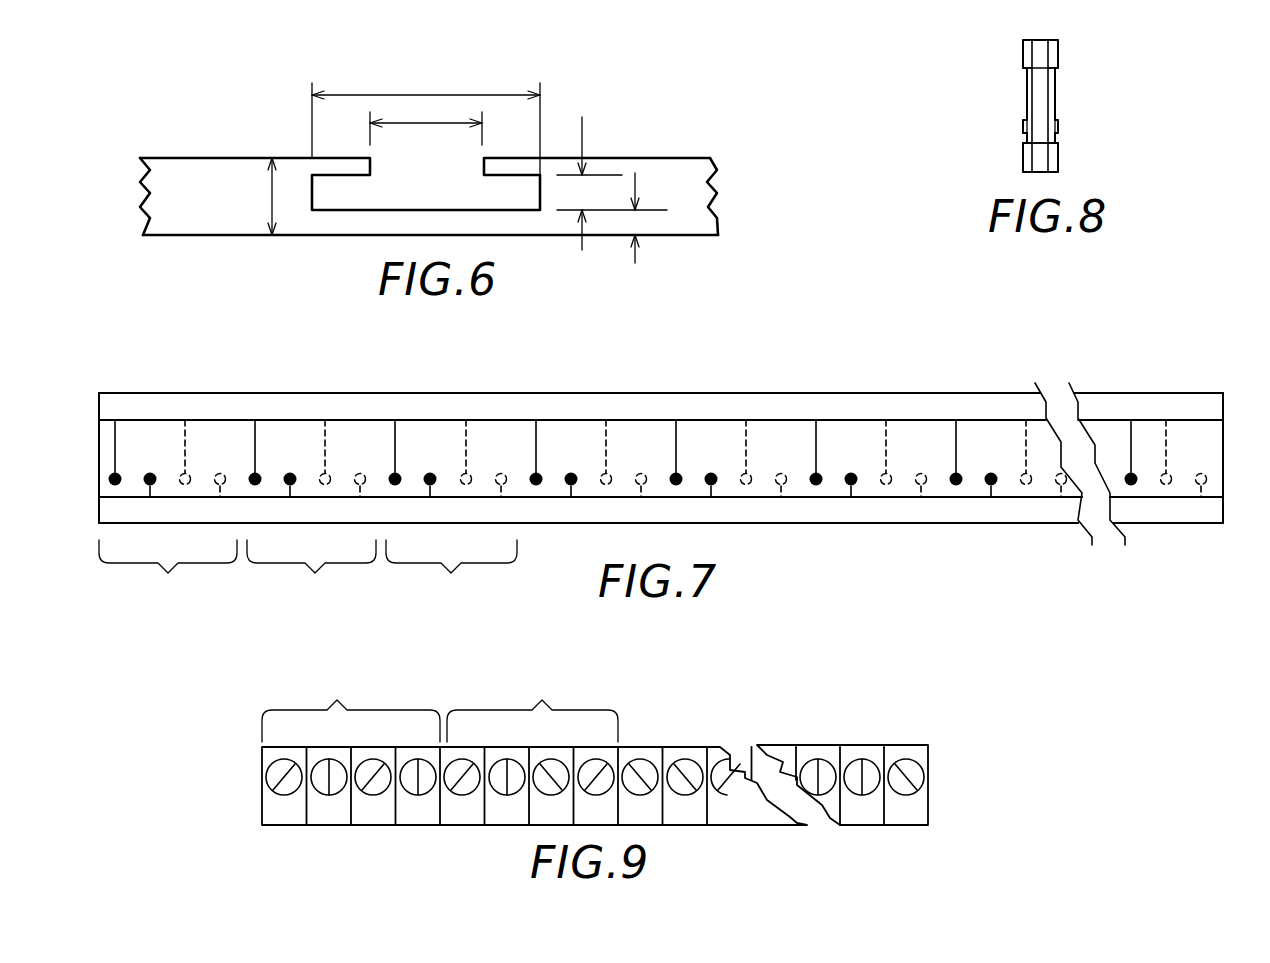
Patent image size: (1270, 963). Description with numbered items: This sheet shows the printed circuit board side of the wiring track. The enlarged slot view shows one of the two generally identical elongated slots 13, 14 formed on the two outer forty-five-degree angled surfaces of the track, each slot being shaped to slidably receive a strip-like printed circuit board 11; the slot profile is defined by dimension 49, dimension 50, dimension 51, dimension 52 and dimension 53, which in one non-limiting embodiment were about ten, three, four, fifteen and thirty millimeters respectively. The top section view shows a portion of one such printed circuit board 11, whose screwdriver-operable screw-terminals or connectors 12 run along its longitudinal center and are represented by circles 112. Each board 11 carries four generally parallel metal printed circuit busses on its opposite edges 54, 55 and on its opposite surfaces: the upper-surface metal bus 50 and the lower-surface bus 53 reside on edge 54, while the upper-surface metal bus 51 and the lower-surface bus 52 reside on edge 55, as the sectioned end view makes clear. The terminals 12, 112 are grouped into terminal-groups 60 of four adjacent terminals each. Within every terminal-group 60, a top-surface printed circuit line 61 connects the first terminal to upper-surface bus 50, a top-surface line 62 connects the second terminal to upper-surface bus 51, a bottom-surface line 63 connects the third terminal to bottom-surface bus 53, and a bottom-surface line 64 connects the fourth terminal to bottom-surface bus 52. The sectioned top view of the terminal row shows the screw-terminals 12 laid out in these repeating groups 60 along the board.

In FIG. 7, the printed circuit board 11 is at (822, 362).
In FIG. 9, the screwdriver-operable electrical connector 12 is at (243, 792).
In FIG. 6, the right-side slot 13 is at (411, 139).
In FIG. 6, the left-side slot 14 is at (243, 97).
In FIG. 6, the dimension 49 is at (272, 193).
In FIG. 6, the upper-surface metal bus 50 is at (635, 260).
In FIG. 8, the upper-surface metal bus 50 is at (1060, 52).
In FIG. 7, the upper-surface metal bus 50 is at (614, 393).
In FIG. 6, the upper-surface metal bus 51 is at (582, 133).
In FIG. 8, the upper-surface metal bus 51 is at (1058, 157).
In FIG. 7, the upper-surface metal bus 51 is at (748, 522).
In FIG. 6, the lower-surface bus 52 is at (413, 124).
In FIG. 8, the lower-surface bus 52 is at (1023, 158).
In FIG. 6, the lower-surface bus 53 is at (432, 95).
In FIG. 8, the lower-surface bus 53 is at (1023, 55).
In FIG. 7, the edge 54 is at (1136, 392).
In FIG. 7, the edge 55 is at (1180, 525).
In FIG. 7, the terminal-group 60 is at (308, 574).
In FIG. 9, the terminal-group 60 is at (440, 709).
In FIG. 8, the top-PCB-surface metal printed circuit line 61 is at (1057, 82).
In FIG. 7, the top-PCB-surface metal printed circuit line 61 is at (112, 440).
In FIG. 8, the top-PCB-surface metal printed circuit line 62 is at (1055, 137).
In FIG. 7, the top-PCB-surface metal printed circuit line 62 is at (148, 492).
In FIG. 8, the bottom-PCB-surface metal printed circuit line 63 is at (1027, 80).
In FIG. 7, the bottom-PCB-surface metal printed circuit line 63 is at (187, 457).
In FIG. 8, the bottom-PCB-surface metal printed circuit line 64 is at (1027, 135).
In FIG. 7, the bottom-PCB-surface metal printed circuit line 64 is at (208, 495).
In FIG. 8, the circle 112 is at (1023, 122).
In FIG. 7, the circle 112 is at (106, 483).